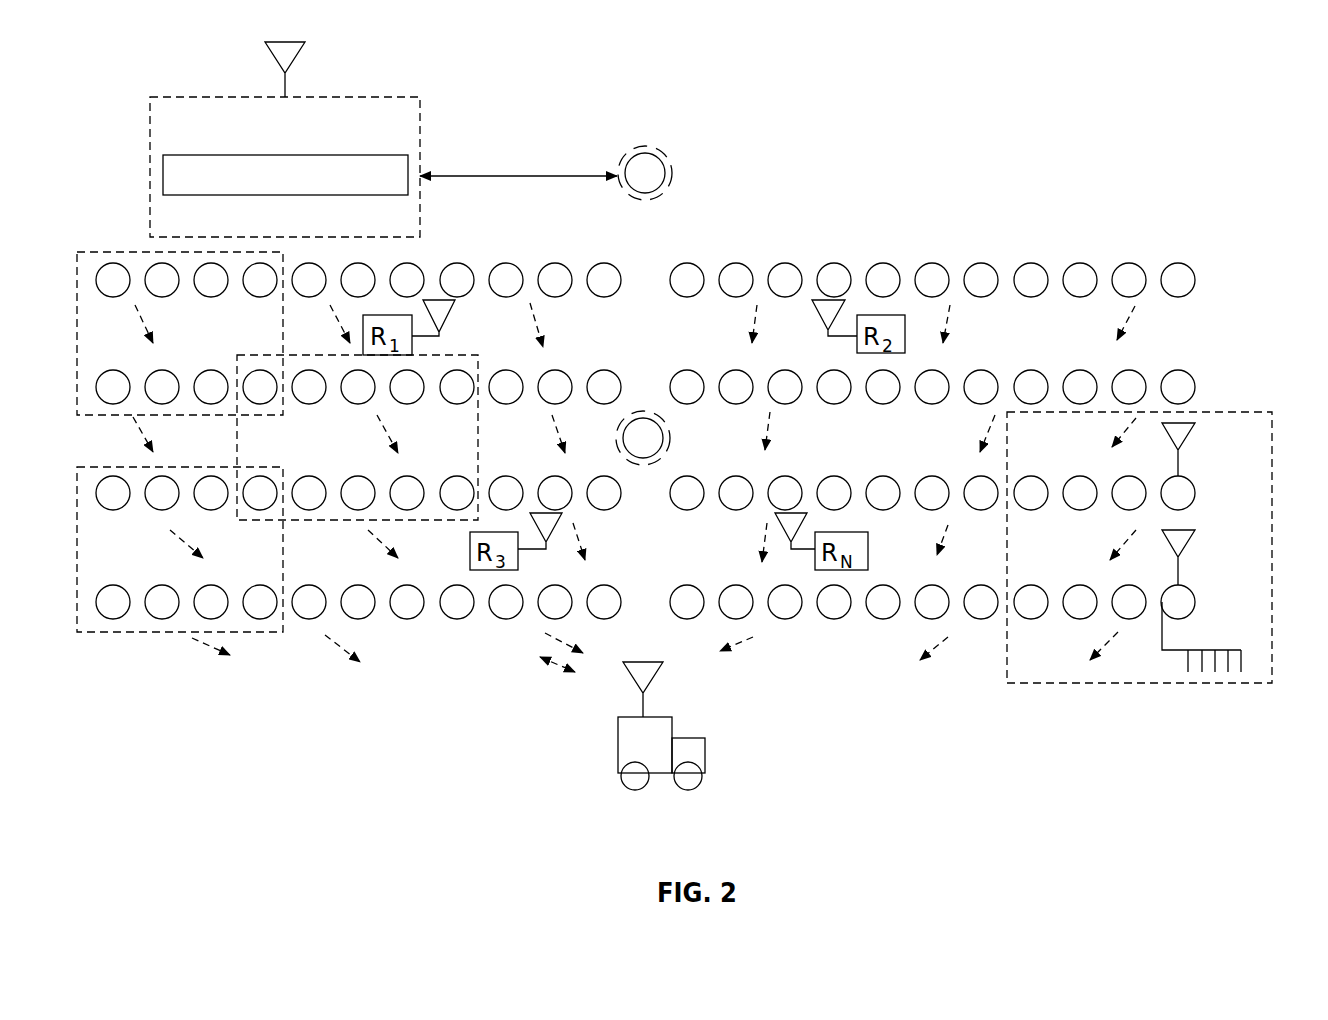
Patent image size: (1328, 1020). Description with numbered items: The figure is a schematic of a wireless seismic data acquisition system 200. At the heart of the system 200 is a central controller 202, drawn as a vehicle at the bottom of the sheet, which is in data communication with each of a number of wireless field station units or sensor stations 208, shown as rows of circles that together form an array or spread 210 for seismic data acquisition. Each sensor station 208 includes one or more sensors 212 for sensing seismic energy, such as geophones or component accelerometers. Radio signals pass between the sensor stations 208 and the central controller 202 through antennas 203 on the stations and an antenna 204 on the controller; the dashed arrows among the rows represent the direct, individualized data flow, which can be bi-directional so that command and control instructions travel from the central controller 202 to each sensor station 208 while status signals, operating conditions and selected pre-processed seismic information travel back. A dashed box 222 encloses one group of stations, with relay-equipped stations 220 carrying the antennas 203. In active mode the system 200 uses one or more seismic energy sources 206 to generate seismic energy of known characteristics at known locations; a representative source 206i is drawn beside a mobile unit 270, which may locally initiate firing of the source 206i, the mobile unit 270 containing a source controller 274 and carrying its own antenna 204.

The wireless seismic data acquisition system 200 is at (888, 730).
The central controller 202 is at (707, 757).
The antenna 203 is at (1190, 440).
The antenna 204 is at (298, 57).
The seismic energy source 206 is at (670, 437).
The seismic energy source 206i is at (653, 145).
The sensor station 208 is at (1180, 265).
The array 210 is at (990, 125).
The sensor 212 is at (1242, 665).
The relay node 220 is at (1185, 502).
The node cluster 222 is at (1255, 412).
The mobile unit 270 is at (420, 107).
The source controller 274 is at (163, 177).